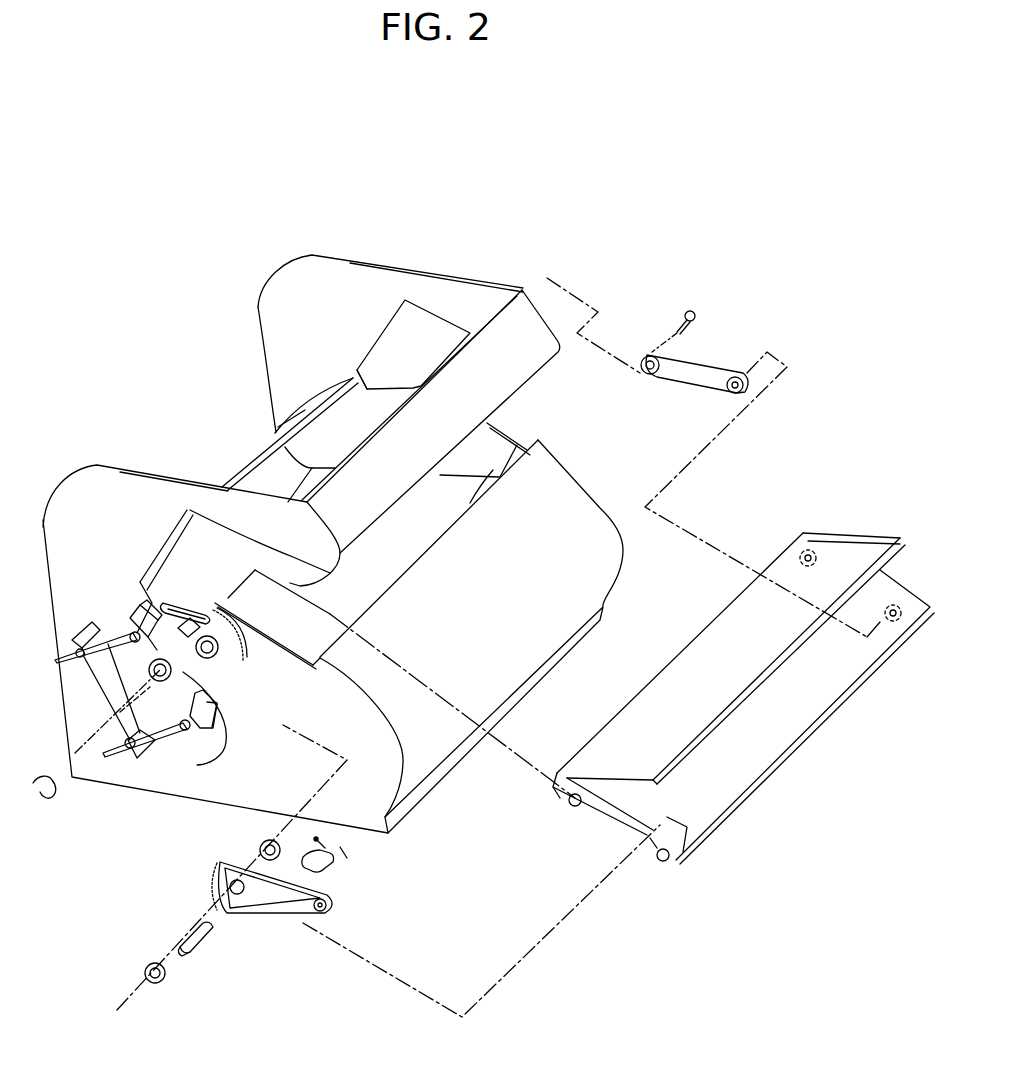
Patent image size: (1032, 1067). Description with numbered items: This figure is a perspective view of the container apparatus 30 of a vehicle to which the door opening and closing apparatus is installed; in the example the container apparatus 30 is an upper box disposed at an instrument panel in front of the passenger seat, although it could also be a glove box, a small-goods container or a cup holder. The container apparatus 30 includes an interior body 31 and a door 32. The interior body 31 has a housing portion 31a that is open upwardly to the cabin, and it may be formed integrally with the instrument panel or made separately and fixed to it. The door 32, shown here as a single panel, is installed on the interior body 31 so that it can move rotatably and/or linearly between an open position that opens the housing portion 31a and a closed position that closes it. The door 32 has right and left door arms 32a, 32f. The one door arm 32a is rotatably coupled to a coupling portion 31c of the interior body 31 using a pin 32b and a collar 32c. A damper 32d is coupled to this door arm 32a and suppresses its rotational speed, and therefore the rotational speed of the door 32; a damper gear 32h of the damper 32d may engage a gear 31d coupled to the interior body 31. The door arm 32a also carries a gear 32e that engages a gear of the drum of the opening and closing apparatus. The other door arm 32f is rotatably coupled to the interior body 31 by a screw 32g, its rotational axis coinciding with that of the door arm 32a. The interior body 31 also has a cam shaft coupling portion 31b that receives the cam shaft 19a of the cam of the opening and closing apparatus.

The container apparatus 30 is at (362, 262).
The interior body 31 is at (567, 480).
The housing portion 31a is at (523, 440).
The cam shaft coupling portion 31b is at (210, 750).
The coupling portion 31c is at (207, 657).
The gear 31d is at (247, 645).
The door 32 is at (913, 592).
The door arm 32a is at (333, 903).
The pin 32b is at (200, 943).
The collar 32c is at (260, 848).
The damper 32d is at (333, 867).
The gear 32e is at (213, 888).
The door arm 32f is at (708, 363).
The screw 32g is at (693, 310).
The damper gear 32h is at (330, 845).
The cam shaft 19a is at (52, 797).